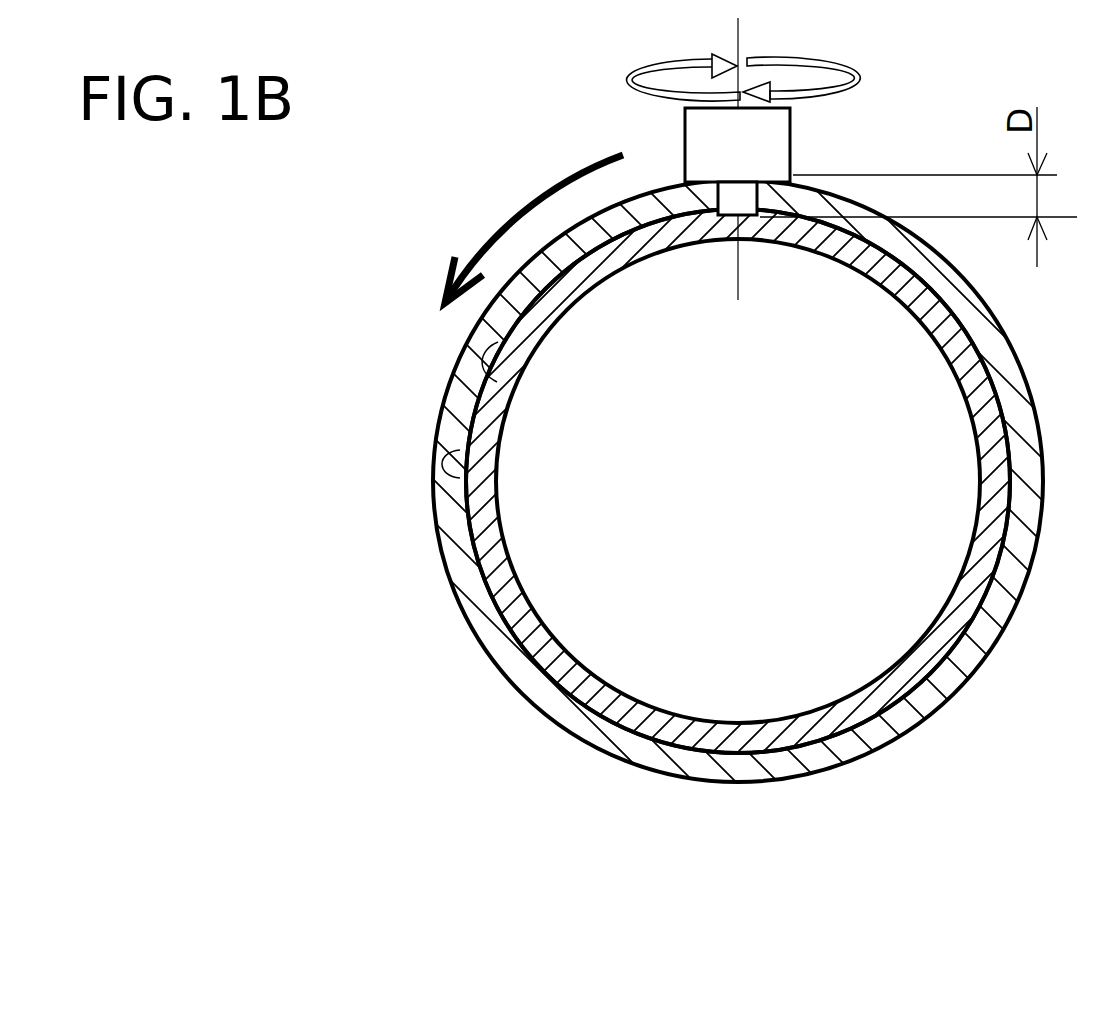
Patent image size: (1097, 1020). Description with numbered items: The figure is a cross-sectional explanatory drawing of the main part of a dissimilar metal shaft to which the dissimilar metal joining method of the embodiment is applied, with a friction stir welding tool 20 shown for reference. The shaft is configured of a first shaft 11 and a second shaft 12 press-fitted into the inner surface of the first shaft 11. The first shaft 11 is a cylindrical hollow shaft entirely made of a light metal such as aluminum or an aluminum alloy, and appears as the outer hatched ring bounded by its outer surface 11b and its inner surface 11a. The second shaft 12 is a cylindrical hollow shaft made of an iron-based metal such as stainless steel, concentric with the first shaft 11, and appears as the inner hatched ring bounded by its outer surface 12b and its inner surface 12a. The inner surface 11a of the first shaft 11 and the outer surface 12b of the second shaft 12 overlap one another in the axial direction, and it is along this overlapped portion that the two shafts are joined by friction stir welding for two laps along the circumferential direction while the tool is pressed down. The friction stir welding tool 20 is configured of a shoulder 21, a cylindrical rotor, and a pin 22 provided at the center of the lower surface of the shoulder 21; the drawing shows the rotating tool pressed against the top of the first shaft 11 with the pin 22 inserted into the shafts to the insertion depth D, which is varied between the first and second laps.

The first shaft 11 is at (548, 500).
The inner surface of the first shaft 11a is at (498, 344).
The outer surface of the first shaft 11b is at (437, 415).
The second shaft 12 is at (548, 500).
The inner surface of the second shaft 12a is at (507, 413).
The outer surface of the second shaft 12b is at (467, 443).
The friction stir welding tool 20 is at (719, 159).
The shoulder 21 is at (775, 144).
The pin 22 is at (748, 192).